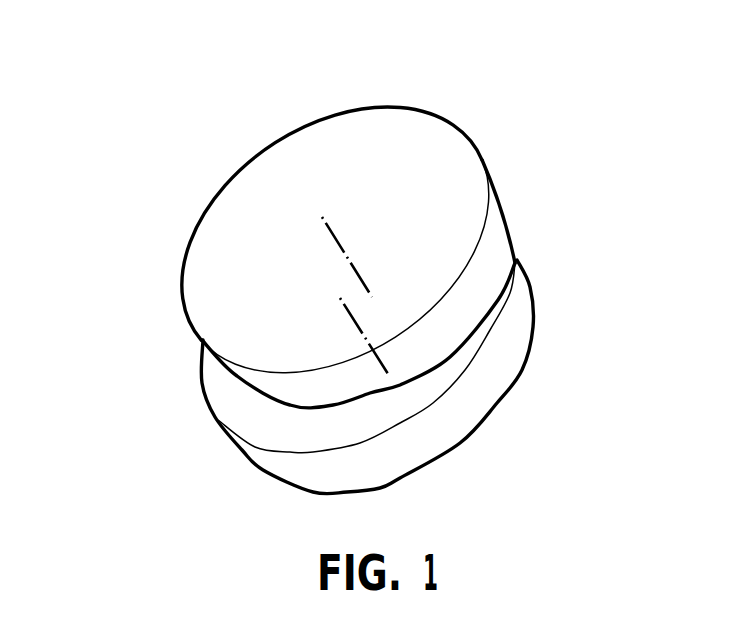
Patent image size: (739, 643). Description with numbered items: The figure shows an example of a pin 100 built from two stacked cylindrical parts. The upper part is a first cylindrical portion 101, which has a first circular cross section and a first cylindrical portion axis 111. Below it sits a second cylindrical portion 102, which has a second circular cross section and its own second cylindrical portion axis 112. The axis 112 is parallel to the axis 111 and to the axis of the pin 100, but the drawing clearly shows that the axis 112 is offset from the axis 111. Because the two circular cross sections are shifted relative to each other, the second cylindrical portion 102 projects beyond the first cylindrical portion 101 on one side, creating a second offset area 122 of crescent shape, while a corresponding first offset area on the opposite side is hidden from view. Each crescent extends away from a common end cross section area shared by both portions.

The pin 100 is at (334, 289).
The first cylindrical portion 101 is at (381, 217).
The second cylindrical portion 102 is at (300, 406).
The first cylindrical portion axis 111 is at (363, 226).
The second cylindrical portion axis 112 is at (407, 344).
The second offset area 122 is at (259, 451).